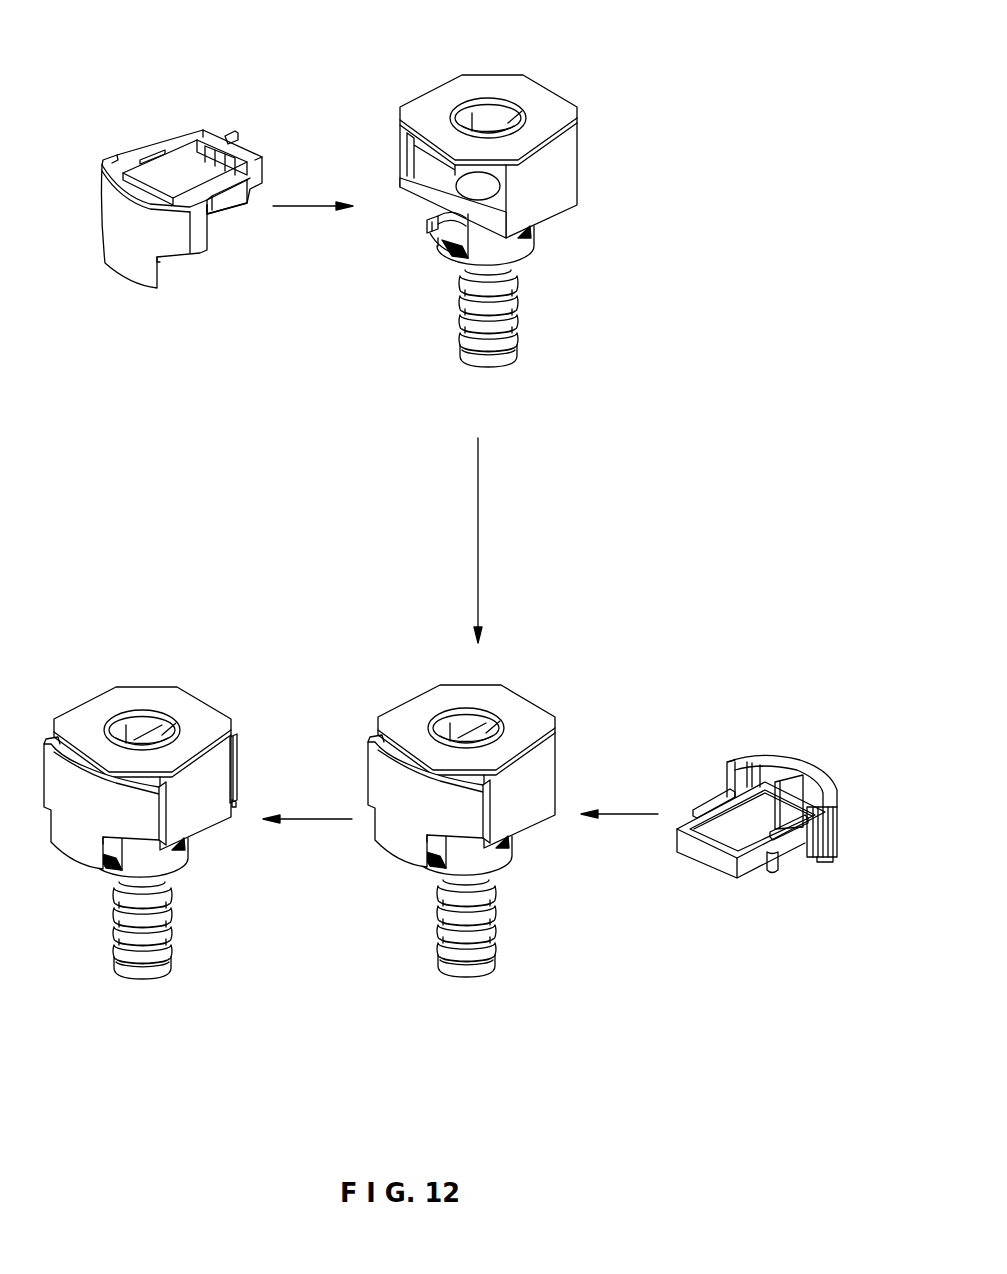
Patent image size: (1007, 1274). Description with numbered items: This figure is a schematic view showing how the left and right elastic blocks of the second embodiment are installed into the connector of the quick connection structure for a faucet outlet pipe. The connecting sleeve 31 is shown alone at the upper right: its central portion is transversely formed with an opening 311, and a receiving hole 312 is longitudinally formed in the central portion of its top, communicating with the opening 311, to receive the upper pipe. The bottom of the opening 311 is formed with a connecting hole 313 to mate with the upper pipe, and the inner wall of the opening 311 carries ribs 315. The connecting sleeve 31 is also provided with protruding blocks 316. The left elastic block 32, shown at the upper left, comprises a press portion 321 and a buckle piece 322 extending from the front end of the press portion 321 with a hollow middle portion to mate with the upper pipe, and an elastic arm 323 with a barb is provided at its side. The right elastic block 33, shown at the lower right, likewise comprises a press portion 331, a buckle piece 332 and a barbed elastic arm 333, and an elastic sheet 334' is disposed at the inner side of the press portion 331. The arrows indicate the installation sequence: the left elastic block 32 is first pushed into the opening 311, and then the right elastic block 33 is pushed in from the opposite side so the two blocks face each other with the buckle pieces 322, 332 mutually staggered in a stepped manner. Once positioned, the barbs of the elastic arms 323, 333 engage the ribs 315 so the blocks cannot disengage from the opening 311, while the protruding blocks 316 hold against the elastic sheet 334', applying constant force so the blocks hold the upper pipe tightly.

The connecting sleeve 31 is at (565, 146).
The opening 311 is at (495, 210).
The receiving hole 312 is at (508, 125).
The connecting hole 313 is at (490, 194).
The ribs 315 is at (470, 125).
The protruding blocks 316 is at (443, 237).
The left elastic block 32 is at (200, 250).
The press portion 321 is at (120, 216).
The buckle piece 322 is at (190, 178).
The elastic arm 323 is at (230, 197).
The right elastic block 33 is at (777, 778).
The press portion 331 is at (800, 757).
The buckle piece 332 is at (755, 865).
The elastic arm 333 is at (795, 857).
The elastic sheet 334' is at (820, 768).